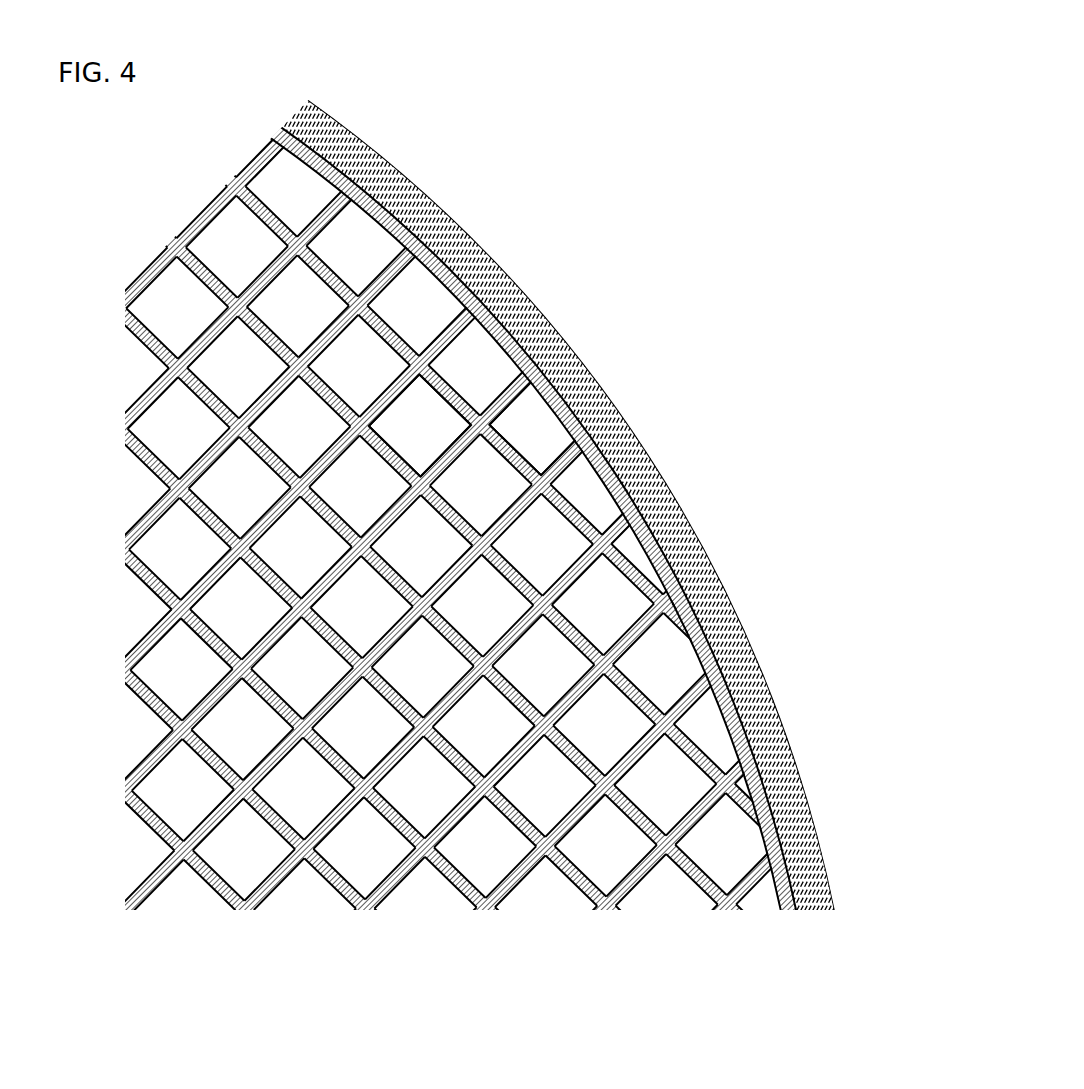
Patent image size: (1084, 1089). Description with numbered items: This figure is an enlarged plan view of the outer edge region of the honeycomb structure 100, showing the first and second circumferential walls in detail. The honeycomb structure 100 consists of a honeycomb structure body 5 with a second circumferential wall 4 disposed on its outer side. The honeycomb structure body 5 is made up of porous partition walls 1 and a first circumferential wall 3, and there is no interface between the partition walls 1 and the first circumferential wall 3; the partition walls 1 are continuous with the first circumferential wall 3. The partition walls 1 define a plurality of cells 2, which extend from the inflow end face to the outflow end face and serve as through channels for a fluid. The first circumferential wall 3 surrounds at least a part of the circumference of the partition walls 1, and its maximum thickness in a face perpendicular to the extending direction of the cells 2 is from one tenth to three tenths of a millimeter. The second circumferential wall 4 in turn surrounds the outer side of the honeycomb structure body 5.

The honeycomb structure 100 is at (542, 544).
The partition walls 1 is at (458, 452).
The cells 2 is at (418, 443).
The first circumferential wall 3 is at (557, 412).
The second circumferential wall 4 is at (688, 542).
The honeycomb structure body 5 is at (518, 428).